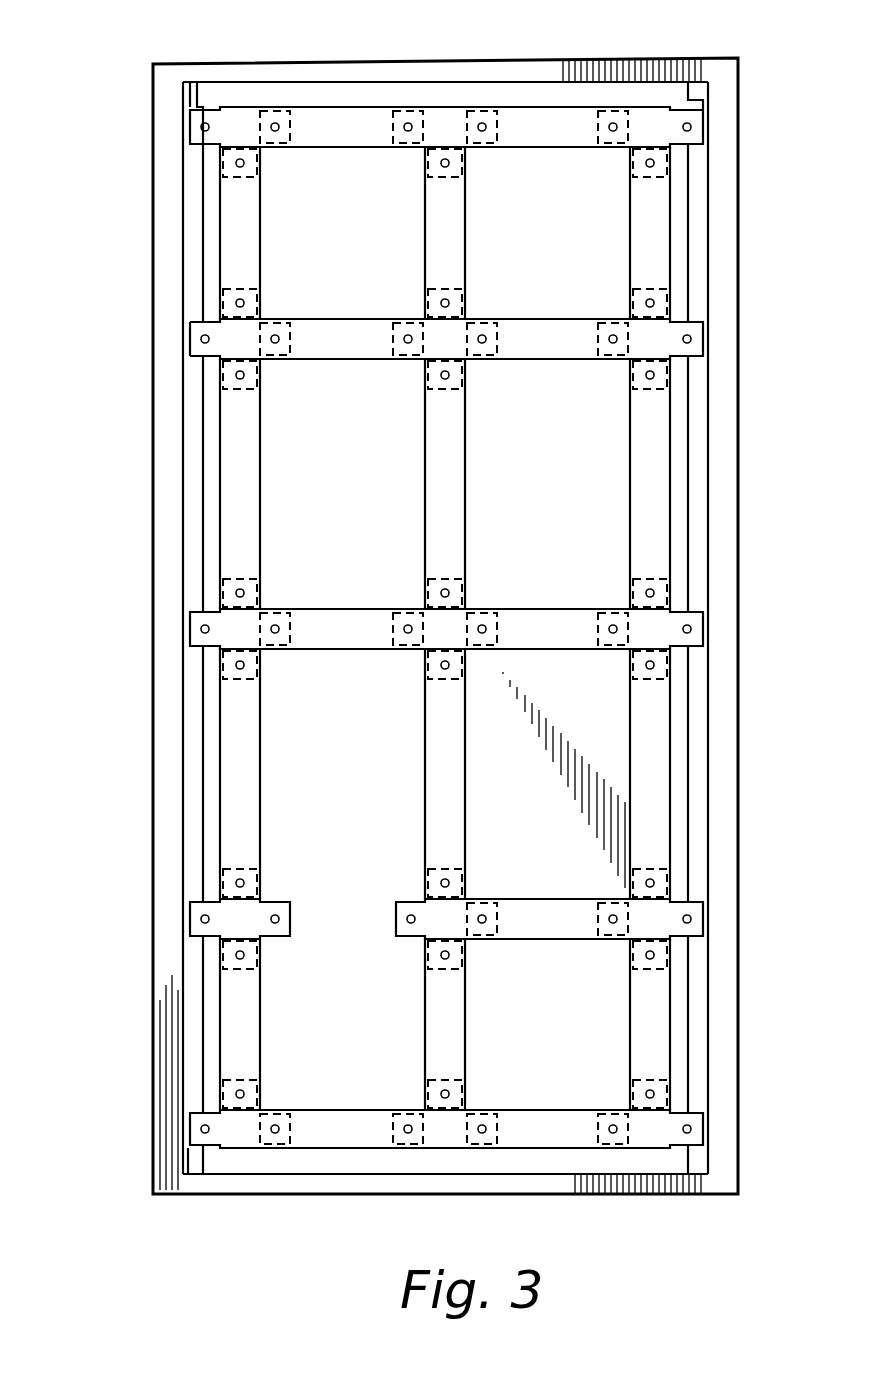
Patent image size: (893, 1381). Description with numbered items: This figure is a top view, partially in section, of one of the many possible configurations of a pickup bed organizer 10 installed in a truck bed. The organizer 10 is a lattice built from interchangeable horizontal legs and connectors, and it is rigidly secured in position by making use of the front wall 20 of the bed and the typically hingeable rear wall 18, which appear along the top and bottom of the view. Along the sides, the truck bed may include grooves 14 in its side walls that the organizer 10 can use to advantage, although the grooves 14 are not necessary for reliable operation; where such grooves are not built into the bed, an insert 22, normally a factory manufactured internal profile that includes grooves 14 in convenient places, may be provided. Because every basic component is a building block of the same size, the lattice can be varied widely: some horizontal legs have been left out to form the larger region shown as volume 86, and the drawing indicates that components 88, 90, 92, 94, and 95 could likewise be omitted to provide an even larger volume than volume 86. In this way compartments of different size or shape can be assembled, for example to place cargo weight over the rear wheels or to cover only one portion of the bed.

The organizer 10 is at (112, 538).
The grooves 14 is at (704, 626).
The rear wall 18 is at (446, 1196).
The front wall 20 is at (450, 61).
The insert 22 is at (698, 770).
The volume 86 is at (361, 931).
The component 88 is at (440, 488).
The component 90 is at (340, 318).
The component 92 is at (468, 222).
The component 94 is at (545, 318).
The component 95 is at (440, 340).